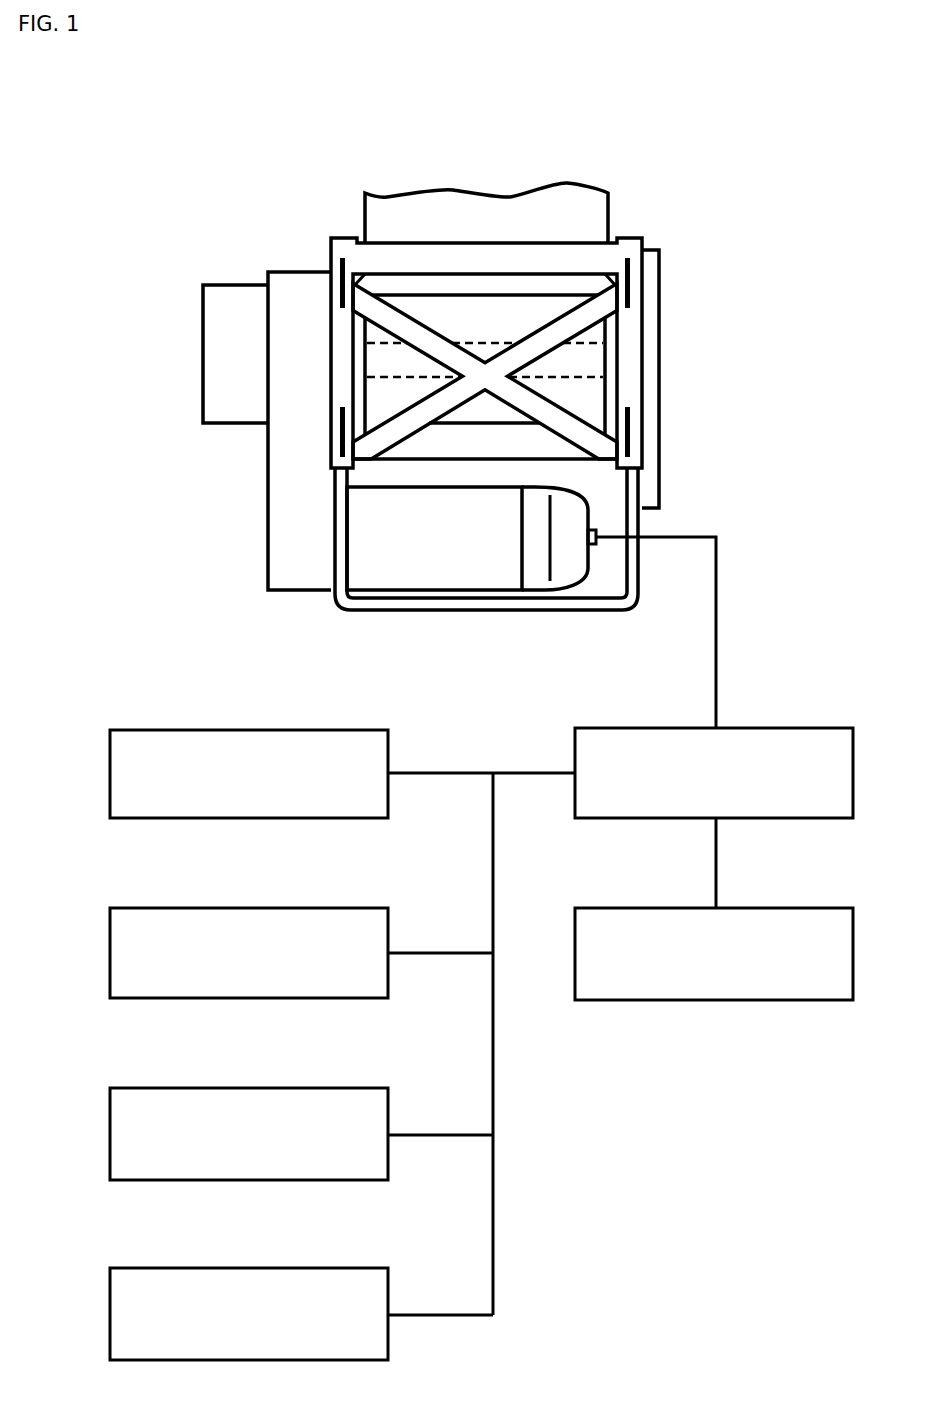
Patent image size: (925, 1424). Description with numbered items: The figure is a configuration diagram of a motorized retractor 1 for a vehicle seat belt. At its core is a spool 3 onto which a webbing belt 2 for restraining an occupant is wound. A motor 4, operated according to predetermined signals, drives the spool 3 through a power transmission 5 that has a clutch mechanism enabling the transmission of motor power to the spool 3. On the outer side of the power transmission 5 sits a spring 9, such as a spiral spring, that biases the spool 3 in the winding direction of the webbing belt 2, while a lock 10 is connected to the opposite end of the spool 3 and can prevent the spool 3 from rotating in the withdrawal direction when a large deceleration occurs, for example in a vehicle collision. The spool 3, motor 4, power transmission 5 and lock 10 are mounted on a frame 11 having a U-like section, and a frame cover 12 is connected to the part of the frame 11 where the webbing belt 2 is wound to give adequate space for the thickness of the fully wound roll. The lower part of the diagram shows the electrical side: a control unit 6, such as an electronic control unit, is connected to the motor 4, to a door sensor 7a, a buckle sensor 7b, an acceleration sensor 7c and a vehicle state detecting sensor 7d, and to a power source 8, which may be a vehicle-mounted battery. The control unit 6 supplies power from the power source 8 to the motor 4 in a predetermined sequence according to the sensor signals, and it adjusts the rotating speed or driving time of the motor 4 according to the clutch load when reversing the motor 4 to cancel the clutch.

The motorized retractor 1 is at (290, 155).
The webbing belt 2 is at (490, 197).
The spool 3 is at (585, 358).
The motor 4 is at (373, 537).
The power transmission 5 is at (292, 303).
The control unit 6 is at (780, 727).
The door sensor 7a is at (207, 727).
The buckle sensor 7b is at (207, 907).
The acceleration sensor 7c is at (207, 1087).
The vehicle state detecting sensor 7d is at (207, 1267).
The power source 8 is at (780, 907).
The spring 9 is at (215, 338).
The lock 10 is at (648, 395).
The frame 11 is at (603, 487).
The frame cover 12 is at (430, 252).